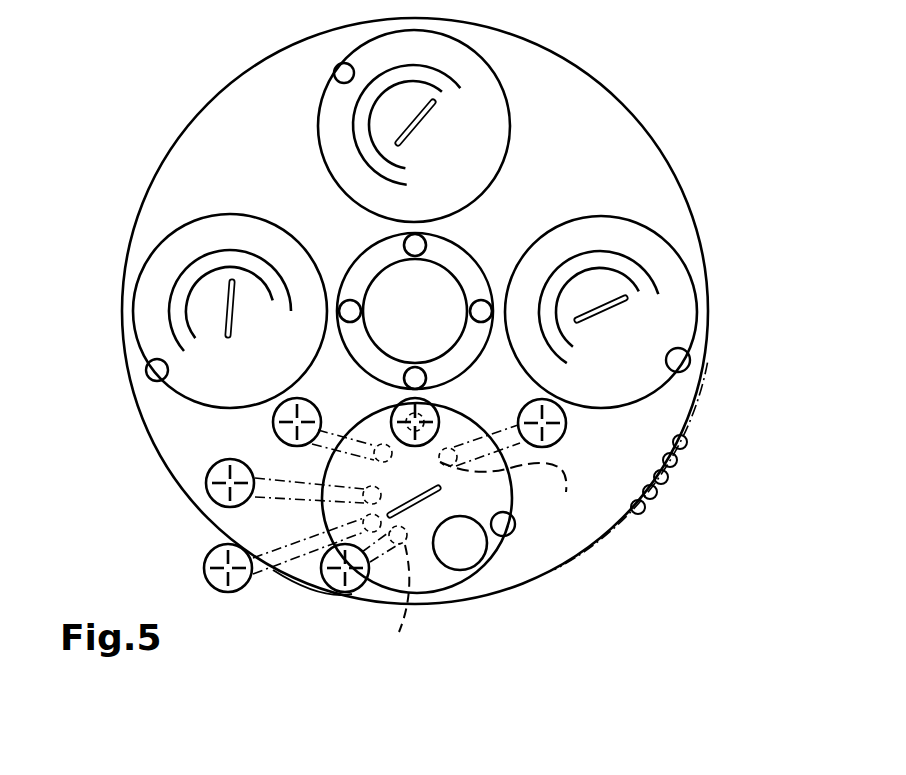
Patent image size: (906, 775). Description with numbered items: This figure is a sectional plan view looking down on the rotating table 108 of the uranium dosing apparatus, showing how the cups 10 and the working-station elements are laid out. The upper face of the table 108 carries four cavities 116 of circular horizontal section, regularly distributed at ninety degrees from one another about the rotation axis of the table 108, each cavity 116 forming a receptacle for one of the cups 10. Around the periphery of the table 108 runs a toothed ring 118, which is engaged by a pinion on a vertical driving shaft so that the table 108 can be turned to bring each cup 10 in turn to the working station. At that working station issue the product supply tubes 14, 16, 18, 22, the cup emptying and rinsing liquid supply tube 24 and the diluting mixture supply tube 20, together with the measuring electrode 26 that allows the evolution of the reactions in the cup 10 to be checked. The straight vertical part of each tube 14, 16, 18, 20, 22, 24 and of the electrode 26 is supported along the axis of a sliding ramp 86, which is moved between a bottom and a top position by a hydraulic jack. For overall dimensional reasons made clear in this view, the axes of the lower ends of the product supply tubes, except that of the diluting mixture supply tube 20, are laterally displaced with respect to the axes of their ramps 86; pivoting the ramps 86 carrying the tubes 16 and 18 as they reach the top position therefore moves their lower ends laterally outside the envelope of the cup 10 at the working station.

The cup 10 is at (520, 120).
The product supply tube 14 is at (380, 490).
The product supply tube 16 is at (378, 444).
The product supply tube 18 is at (515, 483).
The diluting mixture supply tube 20 is at (466, 426).
The product supply tube 22 is at (394, 608).
The cup emptying and rinsing liquid supply tube 24 is at (372, 500).
The measuring electrode 26 is at (470, 558).
The sliding ramp 86 is at (562, 440).
The table 108 is at (700, 217).
The cavity 116 is at (353, 66).
The toothed ring 118 is at (668, 480).